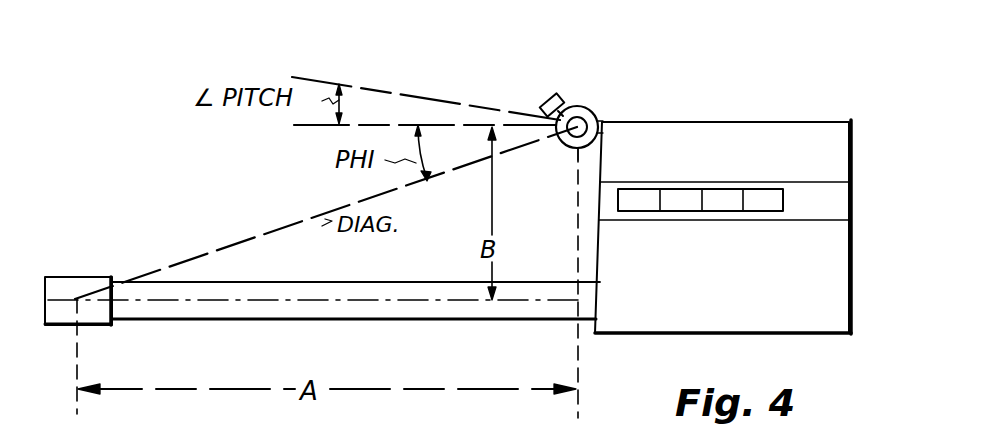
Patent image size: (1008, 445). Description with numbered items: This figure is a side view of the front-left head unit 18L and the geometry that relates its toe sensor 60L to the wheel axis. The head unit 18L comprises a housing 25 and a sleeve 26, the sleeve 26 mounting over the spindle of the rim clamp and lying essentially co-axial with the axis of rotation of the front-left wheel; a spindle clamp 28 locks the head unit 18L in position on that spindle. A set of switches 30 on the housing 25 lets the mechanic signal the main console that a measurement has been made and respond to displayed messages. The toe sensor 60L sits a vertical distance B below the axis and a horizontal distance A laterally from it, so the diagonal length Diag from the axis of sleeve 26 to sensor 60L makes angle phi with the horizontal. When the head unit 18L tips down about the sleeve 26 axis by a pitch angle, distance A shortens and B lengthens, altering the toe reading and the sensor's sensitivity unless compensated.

The head unit 18L is at (750, 177).
The housing 25 is at (750, 227).
The sleeve 26 is at (597, 104).
The spindle clamp 28 is at (531, 85).
The set of switches 30 is at (700, 147).
The toe sensor 60L is at (85, 272).